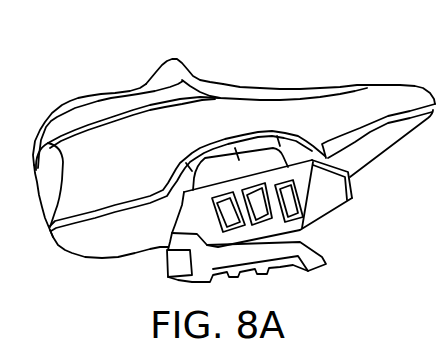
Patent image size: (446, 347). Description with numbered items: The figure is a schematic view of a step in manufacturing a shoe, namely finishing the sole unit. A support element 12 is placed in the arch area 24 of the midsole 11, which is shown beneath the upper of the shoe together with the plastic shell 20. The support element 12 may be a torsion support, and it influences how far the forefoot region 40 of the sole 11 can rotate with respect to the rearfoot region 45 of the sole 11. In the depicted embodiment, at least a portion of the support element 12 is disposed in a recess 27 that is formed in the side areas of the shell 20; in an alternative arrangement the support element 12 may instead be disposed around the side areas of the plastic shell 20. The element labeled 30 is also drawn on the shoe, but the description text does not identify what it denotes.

The midsole 11 is at (130, 243).
The support element 12 is at (323, 212).
The shell 20 is at (248, 108).
The arch area 24 is at (290, 152).
The recess 27 is at (172, 161).
The pull tab 30 is at (181, 70).
The forefoot region 40 is at (383, 152).
The rearfoot region 45 is at (78, 243).